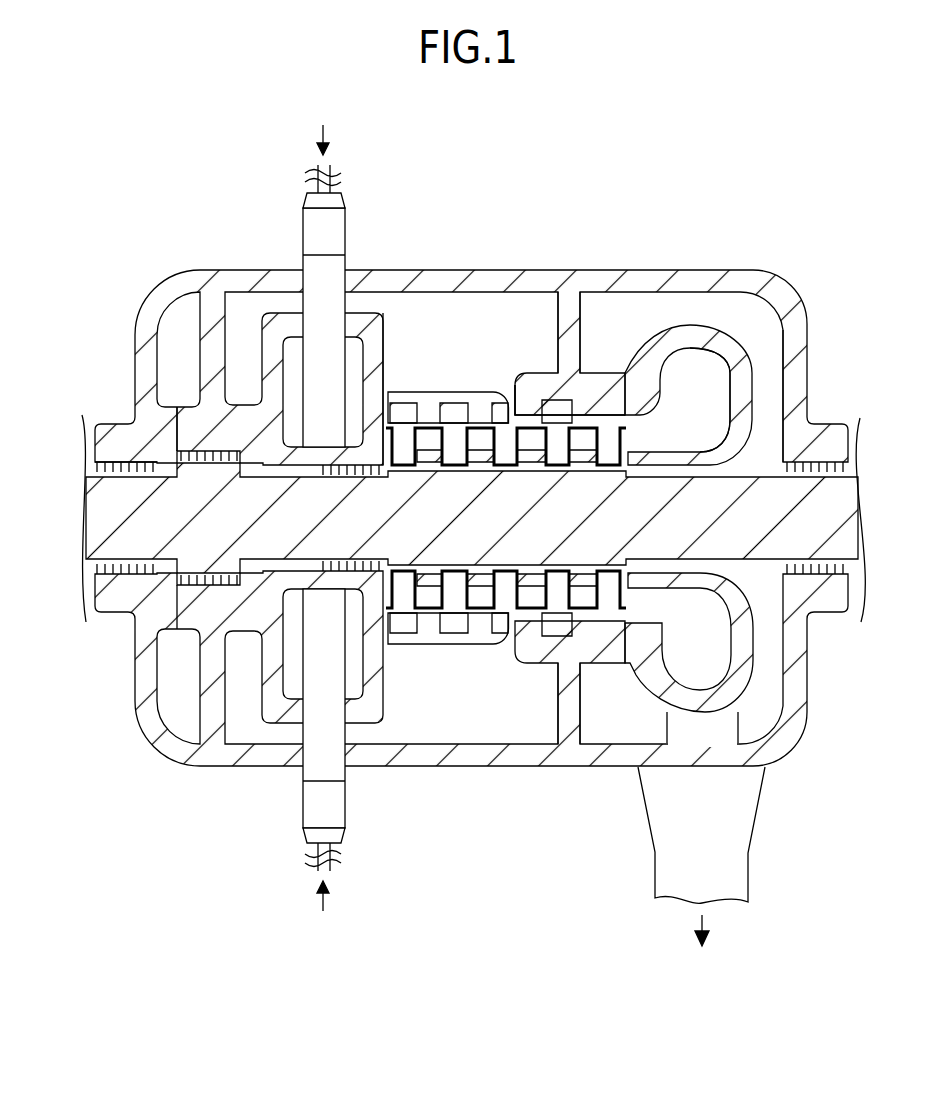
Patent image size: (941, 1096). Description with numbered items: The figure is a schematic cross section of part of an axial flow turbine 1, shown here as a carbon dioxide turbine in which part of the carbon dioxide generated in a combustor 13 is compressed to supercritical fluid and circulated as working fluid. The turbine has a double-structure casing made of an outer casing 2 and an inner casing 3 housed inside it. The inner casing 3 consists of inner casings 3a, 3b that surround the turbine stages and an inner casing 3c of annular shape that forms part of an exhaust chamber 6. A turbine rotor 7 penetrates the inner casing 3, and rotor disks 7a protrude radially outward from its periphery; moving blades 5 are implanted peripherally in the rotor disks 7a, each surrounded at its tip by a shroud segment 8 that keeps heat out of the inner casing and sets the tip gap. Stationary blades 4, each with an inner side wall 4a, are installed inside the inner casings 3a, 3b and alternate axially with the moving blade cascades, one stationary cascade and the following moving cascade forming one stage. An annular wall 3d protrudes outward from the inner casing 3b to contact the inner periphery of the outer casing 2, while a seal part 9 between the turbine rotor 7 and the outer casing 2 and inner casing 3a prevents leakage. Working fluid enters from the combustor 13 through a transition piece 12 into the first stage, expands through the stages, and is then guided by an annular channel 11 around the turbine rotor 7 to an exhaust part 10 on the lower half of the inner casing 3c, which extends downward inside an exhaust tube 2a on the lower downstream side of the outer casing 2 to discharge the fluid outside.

The axial flow turbine 1 is at (491, 535).
The outer casing 2 is at (754, 291).
The exhaust tube 2a is at (762, 800).
The inner casing 3 is at (537, 226).
The inner casing 3a is at (432, 400).
The inner casing 3b is at (603, 385).
The inner casing 3c is at (697, 338).
The annular wall 3d is at (566, 343).
The stationary blade 4 is at (432, 445).
The inner side wall 4a is at (485, 462).
The moving blade 5 is at (450, 445).
The exhaust chamber 6 is at (766, 329).
The turbine rotor 7 is at (823, 518).
The rotor disk 7a is at (555, 462).
The shroud segment 8 is at (400, 405).
The seal part 9 is at (125, 464).
The exhaust part 10 is at (740, 713).
The annular channel 11 is at (718, 402).
The transition piece 12 is at (325, 302).
The combustor 13 is at (318, 233).